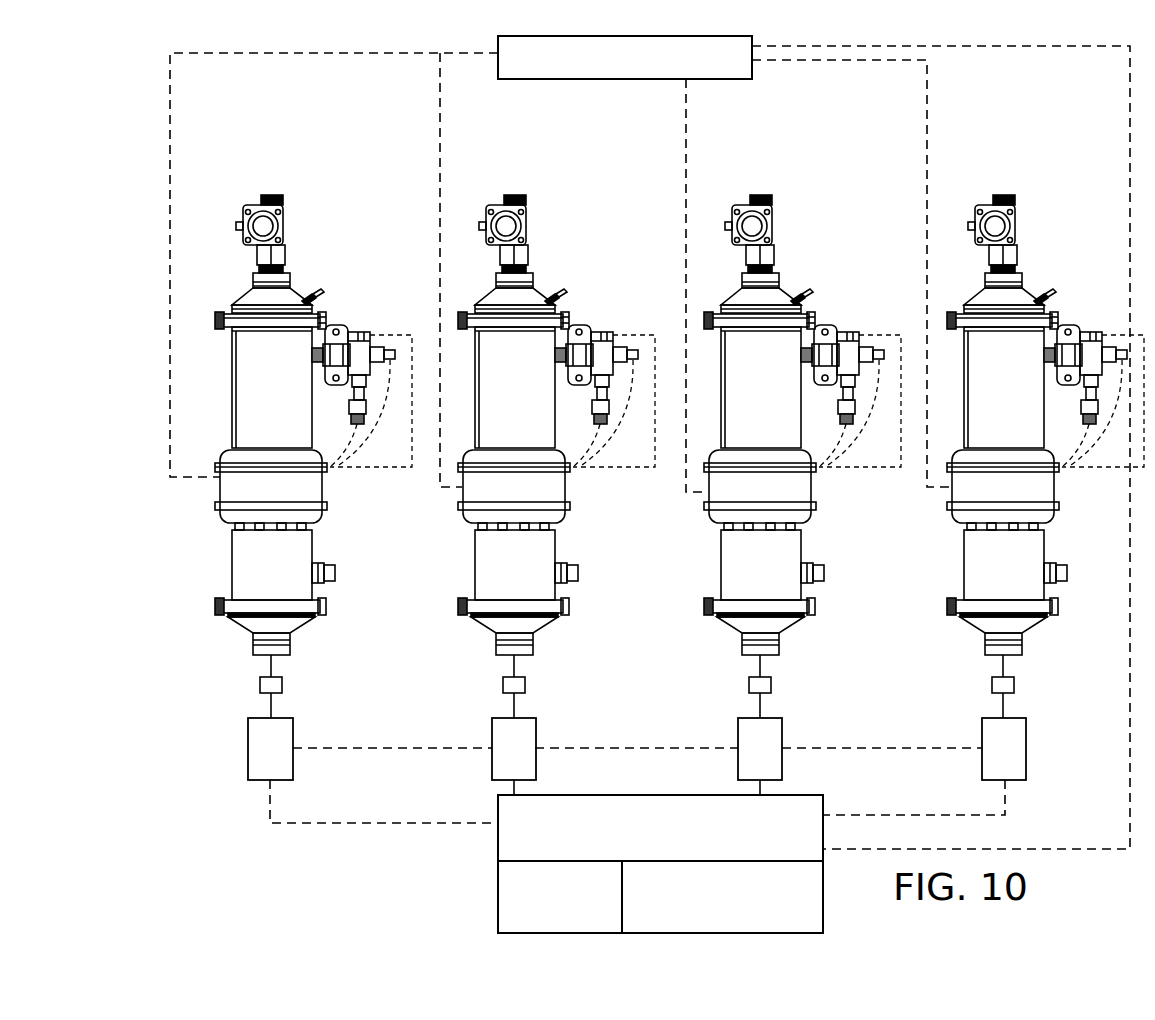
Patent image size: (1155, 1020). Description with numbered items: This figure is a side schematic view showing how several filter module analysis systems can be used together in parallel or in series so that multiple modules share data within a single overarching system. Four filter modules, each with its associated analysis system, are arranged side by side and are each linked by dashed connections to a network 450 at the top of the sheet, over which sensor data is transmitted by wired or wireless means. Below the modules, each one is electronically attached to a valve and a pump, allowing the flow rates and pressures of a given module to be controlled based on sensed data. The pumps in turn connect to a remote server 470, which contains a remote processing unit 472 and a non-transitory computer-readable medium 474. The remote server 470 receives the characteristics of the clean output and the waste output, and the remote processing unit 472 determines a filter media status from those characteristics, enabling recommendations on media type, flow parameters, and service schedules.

The network 450 is at (752, 38).
The remote server 470 is at (498, 858).
The remote processing unit 472 is at (498, 920).
The non-transitory computer-readable medium 474 is at (823, 920).